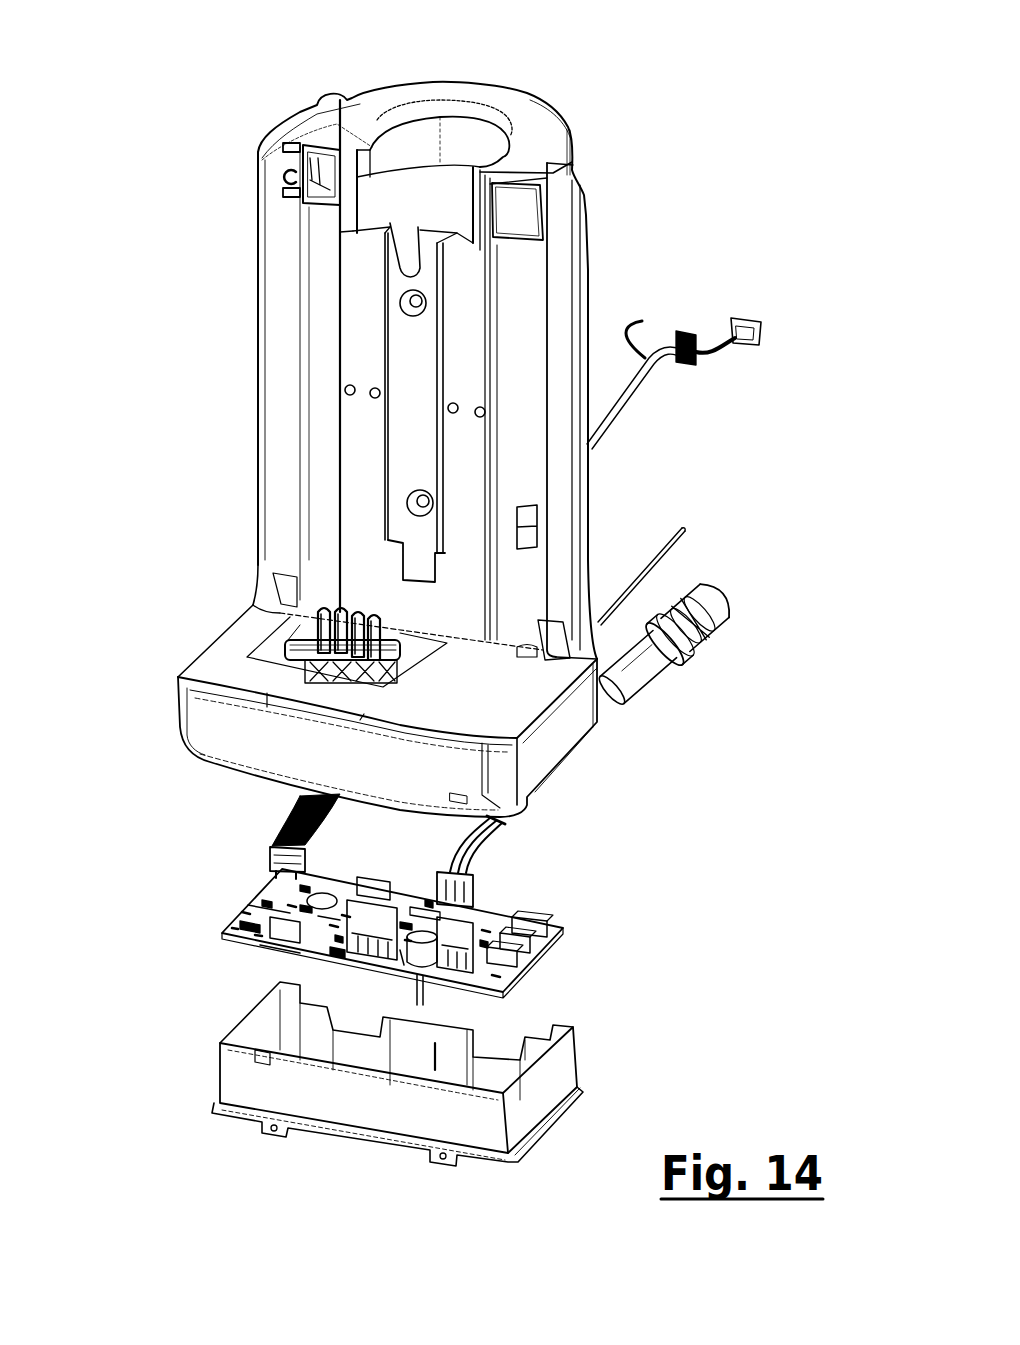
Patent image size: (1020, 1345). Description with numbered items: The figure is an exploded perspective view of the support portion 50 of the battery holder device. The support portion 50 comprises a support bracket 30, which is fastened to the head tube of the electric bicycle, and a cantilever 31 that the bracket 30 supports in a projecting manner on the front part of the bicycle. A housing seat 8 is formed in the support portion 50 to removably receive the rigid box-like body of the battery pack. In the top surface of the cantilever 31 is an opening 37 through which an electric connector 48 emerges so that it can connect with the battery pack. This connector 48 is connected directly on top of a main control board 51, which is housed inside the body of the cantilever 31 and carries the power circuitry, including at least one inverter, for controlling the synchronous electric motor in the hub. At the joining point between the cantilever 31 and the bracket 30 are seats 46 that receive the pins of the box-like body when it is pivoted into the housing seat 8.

The housing seat 8 is at (360, 363).
The support bracket 30 is at (560, 543).
The cantilever 31 is at (553, 737).
The opening 37 is at (318, 652).
The seats 46 is at (520, 648).
The electric connector 48 is at (325, 646).
The support portion 50 is at (641, 270).
The main control board 51 is at (500, 944).